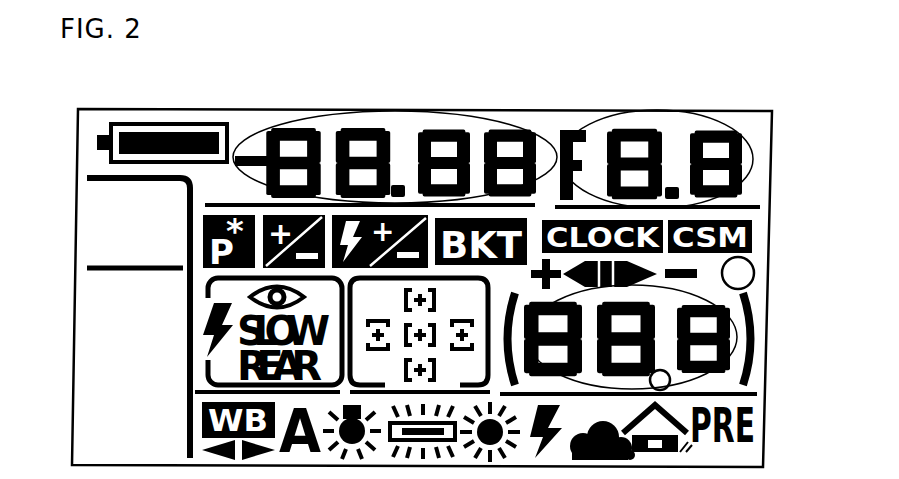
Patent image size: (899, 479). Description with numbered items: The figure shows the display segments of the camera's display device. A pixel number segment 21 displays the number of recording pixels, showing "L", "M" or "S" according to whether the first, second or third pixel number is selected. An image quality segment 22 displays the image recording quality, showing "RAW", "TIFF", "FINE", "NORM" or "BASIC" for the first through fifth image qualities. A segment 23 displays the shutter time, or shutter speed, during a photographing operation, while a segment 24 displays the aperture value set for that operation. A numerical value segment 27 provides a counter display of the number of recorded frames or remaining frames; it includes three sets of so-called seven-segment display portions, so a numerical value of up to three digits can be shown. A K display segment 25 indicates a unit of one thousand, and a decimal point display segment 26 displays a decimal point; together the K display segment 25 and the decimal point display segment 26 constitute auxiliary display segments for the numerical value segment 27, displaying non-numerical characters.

The pixel number segment 21 is at (77, 175).
The image quality segment 22 is at (77, 445).
The segment 23 is at (345, 112).
The segment 24 is at (660, 110).
The K display segment 25 is at (755, 270).
The decimal point display segment 26 is at (662, 391).
The numerical value segment 27 is at (737, 332).